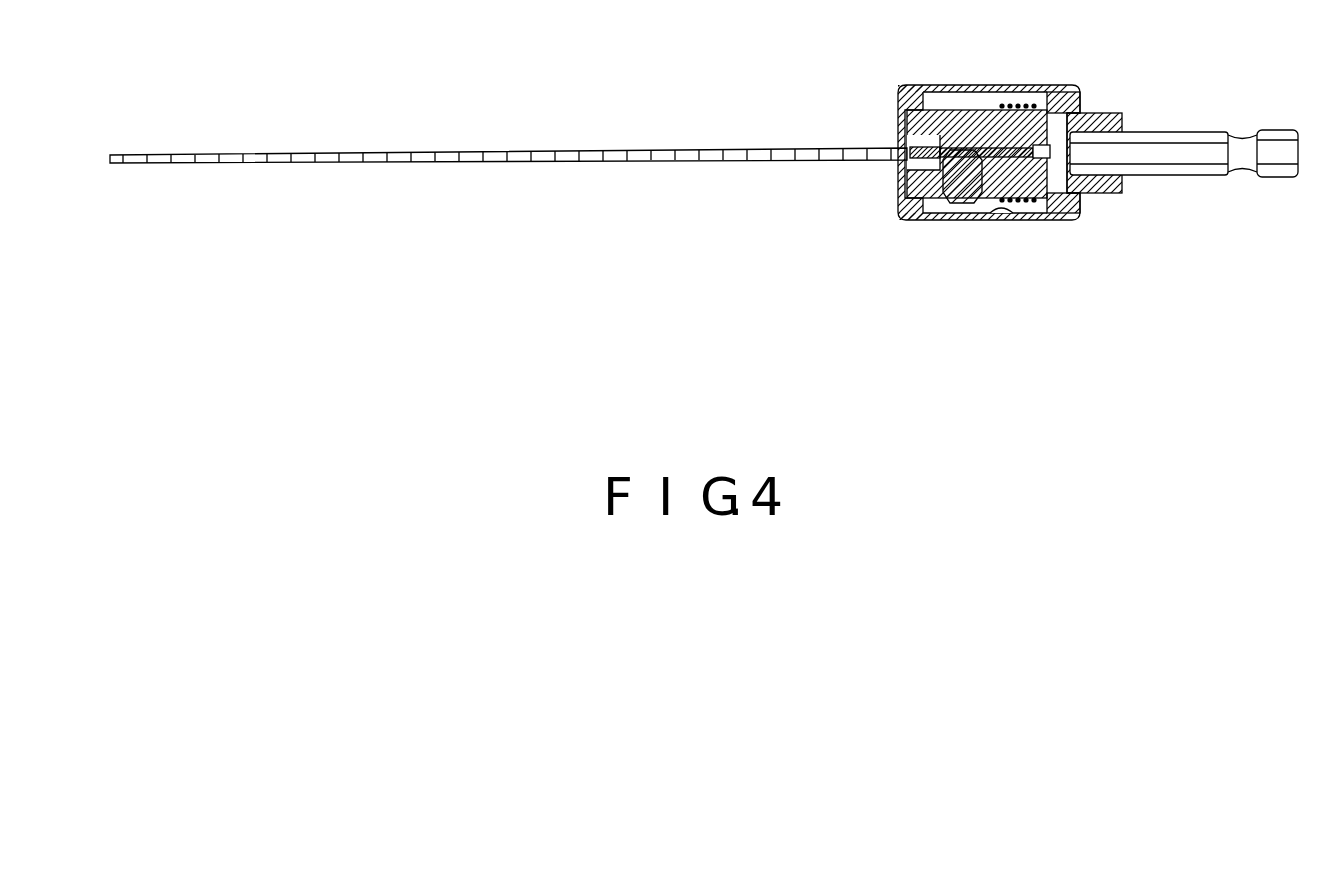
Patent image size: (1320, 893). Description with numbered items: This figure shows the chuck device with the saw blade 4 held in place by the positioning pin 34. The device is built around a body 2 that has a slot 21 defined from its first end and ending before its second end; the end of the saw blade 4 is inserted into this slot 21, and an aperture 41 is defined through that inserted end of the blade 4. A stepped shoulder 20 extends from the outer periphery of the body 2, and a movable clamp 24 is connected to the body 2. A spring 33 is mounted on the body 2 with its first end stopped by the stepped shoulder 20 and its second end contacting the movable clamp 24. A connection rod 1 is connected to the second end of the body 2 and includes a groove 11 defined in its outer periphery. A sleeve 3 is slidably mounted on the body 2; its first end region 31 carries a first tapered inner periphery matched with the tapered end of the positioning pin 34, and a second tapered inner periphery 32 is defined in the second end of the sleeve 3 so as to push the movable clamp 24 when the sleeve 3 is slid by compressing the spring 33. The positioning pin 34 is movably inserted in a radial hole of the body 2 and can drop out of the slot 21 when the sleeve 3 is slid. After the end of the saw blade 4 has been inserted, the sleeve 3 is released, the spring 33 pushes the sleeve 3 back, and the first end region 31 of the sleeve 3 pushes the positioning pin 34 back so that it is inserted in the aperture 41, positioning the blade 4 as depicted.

The connection rod 1 is at (1175, 137).
The groove 11 is at (1240, 142).
The body 2 is at (1122, 195).
The stepped shoulder 20 is at (963, 127).
The slot 21 is at (1043, 147).
The movable clamp 24 is at (1057, 208).
The sleeve 3 is at (983, 218).
The housing bottom wall 31 is at (1013, 218).
The second tapered inner periphery 32 is at (1078, 213).
The spring 33 is at (1003, 106).
The positioning pin 34 is at (953, 205).
The saw blade 4 is at (720, 150).
The aperture 41 is at (915, 142).